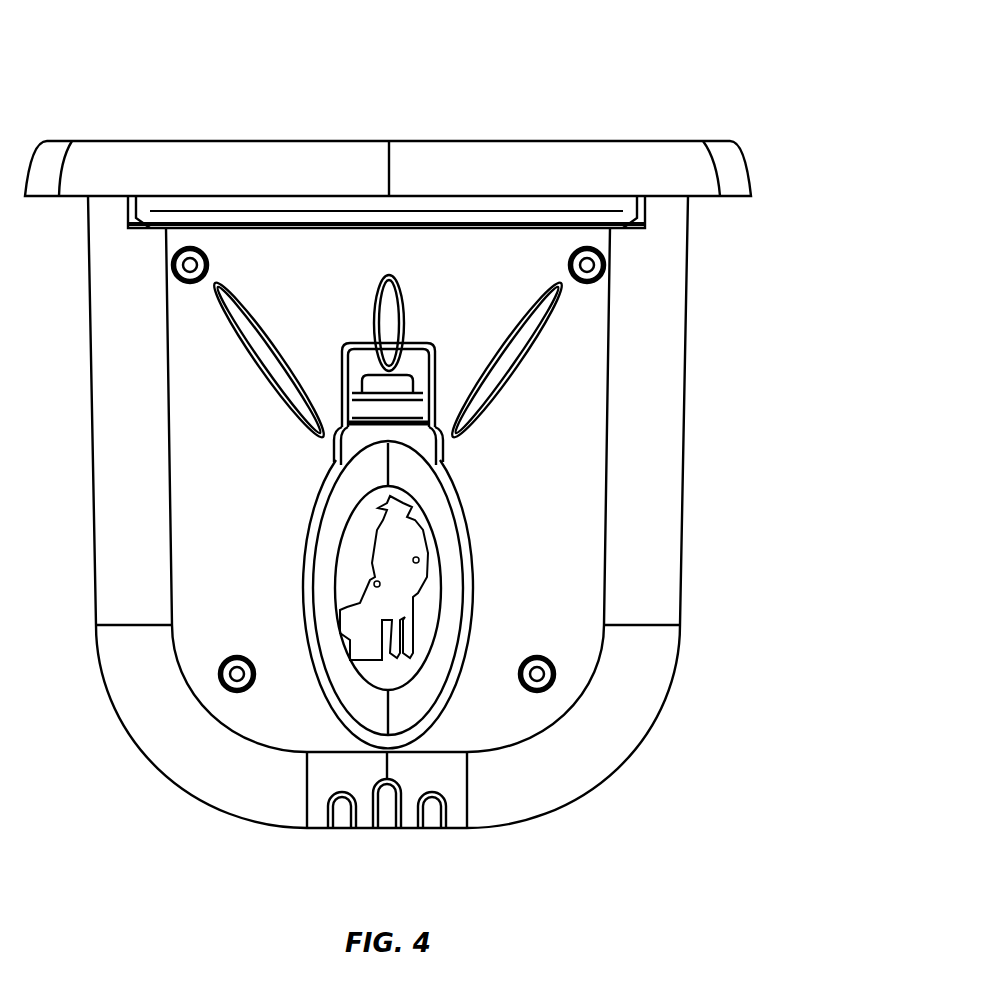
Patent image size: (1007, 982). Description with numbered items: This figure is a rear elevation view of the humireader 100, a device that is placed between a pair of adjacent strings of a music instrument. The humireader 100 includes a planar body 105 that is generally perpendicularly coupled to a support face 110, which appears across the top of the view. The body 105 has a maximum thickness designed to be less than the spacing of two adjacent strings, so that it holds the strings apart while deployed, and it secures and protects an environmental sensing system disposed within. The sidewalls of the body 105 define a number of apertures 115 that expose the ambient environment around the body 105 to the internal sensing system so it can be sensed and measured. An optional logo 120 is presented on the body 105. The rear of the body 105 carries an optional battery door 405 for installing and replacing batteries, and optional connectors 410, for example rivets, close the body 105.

The humireader 100 is at (574, 52).
The planar body 105 is at (230, 785).
The support face 110 is at (108, 165).
The apertures 115 is at (297, 400).
The logo 120 is at (433, 665).
The battery door 405 is at (453, 485).
The connectors 410 is at (222, 682).